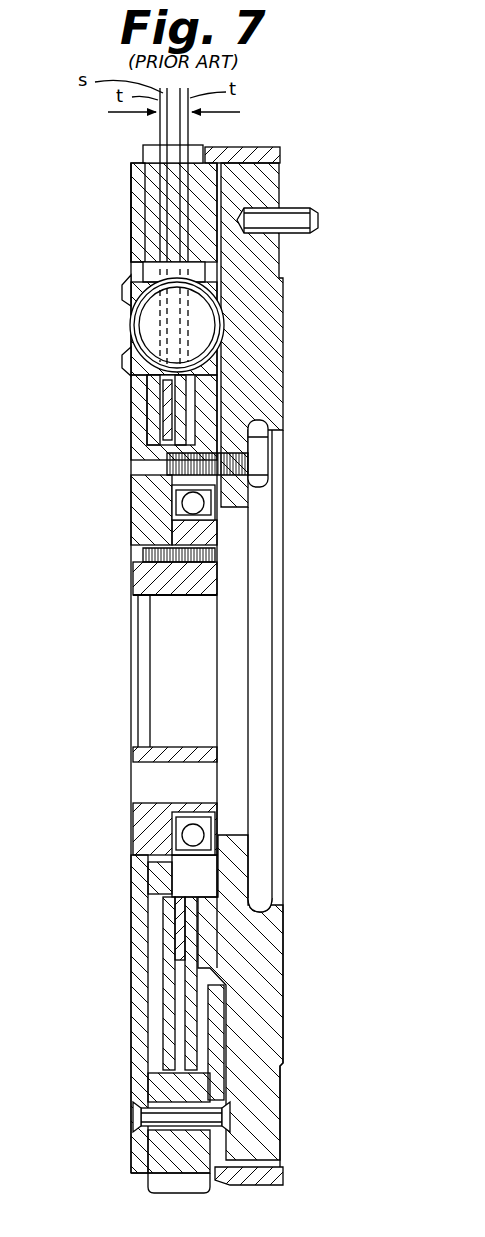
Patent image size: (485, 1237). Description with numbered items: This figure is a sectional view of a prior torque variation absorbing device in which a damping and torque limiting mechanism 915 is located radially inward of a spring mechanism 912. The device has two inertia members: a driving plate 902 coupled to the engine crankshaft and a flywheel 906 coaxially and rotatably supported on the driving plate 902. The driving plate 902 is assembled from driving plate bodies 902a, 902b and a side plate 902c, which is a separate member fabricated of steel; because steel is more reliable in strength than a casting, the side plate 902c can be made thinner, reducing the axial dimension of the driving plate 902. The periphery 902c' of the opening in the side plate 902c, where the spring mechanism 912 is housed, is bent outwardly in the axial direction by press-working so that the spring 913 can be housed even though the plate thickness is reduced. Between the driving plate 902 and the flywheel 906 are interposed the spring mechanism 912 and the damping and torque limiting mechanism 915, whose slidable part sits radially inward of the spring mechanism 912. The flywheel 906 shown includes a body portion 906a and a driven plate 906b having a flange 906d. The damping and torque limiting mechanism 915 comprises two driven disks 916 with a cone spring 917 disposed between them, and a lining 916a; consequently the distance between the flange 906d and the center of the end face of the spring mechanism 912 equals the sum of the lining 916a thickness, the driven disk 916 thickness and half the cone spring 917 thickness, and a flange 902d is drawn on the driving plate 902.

The driving plate 902 is at (126, 190).
The driving plate body 902a is at (143, 168).
The driving plate body 902b is at (155, 578).
The side plate 902c is at (83, 212).
The periphery of the opening of the side plate 902c' is at (76, 311).
The mounting flange 902d is at (235, 152).
The flywheel 906 is at (289, 271).
The lower frame body 906a is at (268, 999).
The driven plate 906b is at (165, 870).
The flange 906d is at (160, 940).
The spring mechanism 912 is at (125, 318).
The spring 913 is at (222, 340).
The damping and torque limiting mechanism 915 is at (126, 418).
The driven disk 916 is at (168, 415).
The lining 916a is at (160, 912).
The cone spring 917 is at (185, 432).